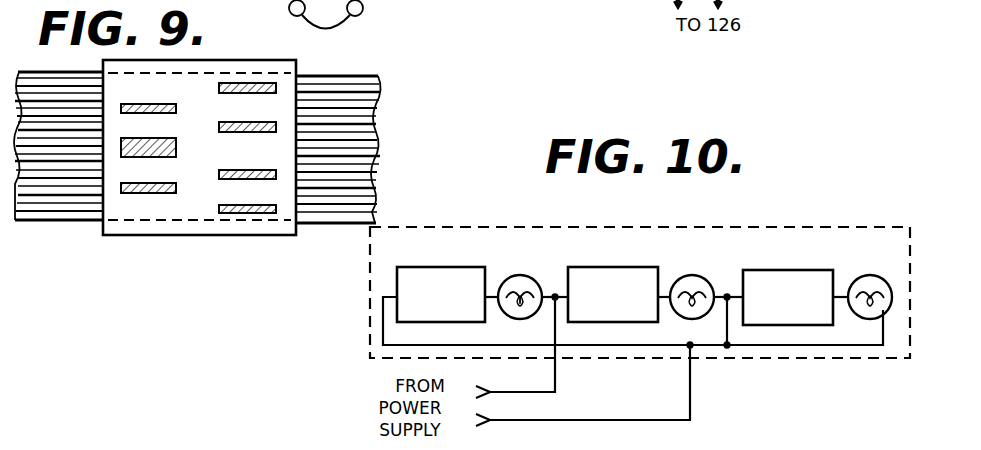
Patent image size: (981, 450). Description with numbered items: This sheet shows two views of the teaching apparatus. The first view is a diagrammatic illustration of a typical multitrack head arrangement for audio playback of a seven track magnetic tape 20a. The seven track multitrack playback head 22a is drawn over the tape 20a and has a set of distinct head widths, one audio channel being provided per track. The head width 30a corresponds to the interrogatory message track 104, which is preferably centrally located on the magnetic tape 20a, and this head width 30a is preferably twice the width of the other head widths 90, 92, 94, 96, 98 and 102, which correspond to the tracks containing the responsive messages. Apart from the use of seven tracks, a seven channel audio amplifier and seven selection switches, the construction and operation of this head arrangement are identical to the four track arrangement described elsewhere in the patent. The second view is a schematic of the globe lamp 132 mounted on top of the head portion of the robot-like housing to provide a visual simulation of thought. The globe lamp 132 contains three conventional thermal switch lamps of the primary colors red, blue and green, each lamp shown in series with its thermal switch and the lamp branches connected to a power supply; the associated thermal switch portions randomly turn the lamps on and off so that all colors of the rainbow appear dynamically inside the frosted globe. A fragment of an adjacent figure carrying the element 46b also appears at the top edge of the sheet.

In FIG. 9, the magnetic tape 20a is at (352, 76).
In FIG. 9, the multitrack playback head 22a is at (215, 60).
In FIG. 9, the head width 30a is at (150, 138).
In FIG. 9, the head width 90 is at (158, 104).
In FIG. 9, the head width 92 is at (272, 83).
In FIG. 9, the head width 94 is at (235, 122).
In FIG. 9, the head width 96 is at (228, 170).
In FIG. 9, the head width 98 is at (140, 183).
In FIG. 9, the head width 102 is at (223, 205).
In FIG. 9, the interrogatory message track 104 is at (56, 148).
In FIG. 10, the globe lamp 132 is at (370, 283).
In FIG. 9, the roller 46b is at (363, 6).